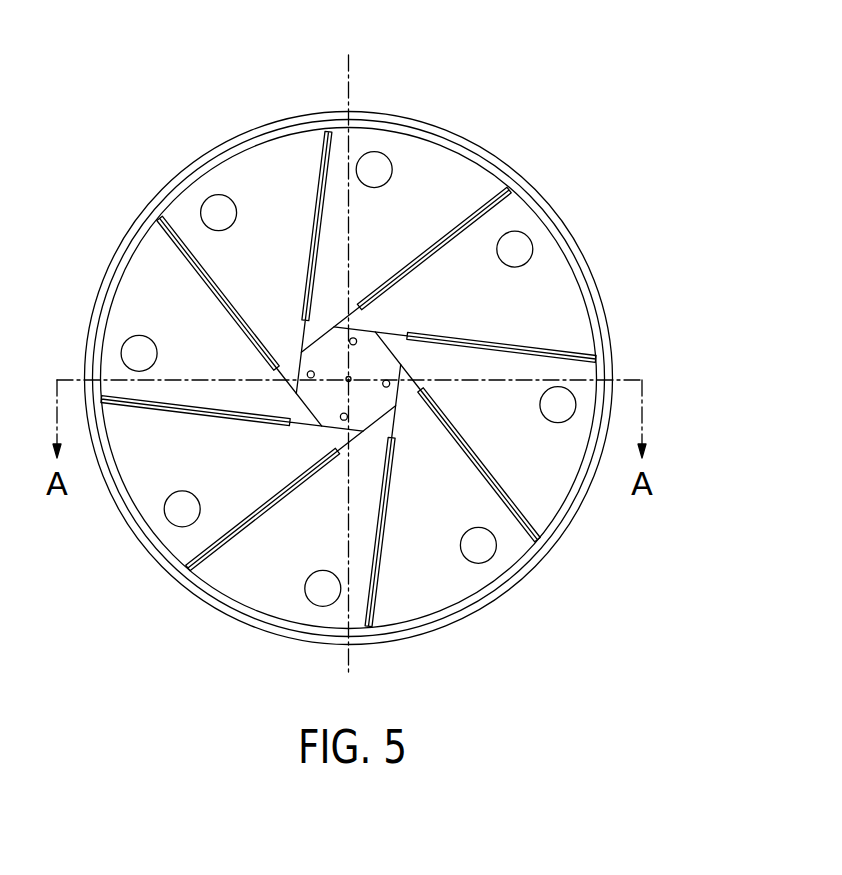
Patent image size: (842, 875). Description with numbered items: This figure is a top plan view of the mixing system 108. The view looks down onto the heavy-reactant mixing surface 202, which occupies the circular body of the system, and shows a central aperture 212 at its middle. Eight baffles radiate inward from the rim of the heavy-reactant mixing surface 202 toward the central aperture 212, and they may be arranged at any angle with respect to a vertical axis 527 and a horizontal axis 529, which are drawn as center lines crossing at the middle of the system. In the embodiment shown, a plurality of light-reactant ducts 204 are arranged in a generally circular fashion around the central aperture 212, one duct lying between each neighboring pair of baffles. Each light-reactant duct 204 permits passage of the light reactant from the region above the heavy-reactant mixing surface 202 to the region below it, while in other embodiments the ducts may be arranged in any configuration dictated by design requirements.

The mixing system 108 is at (573, 93).
The heavy-reactant mixing surface 202 is at (560, 245).
The light-reactant duct 204 is at (378, 152).
The central aperture 212 is at (387, 375).
The vertical axis 527 is at (345, 91).
The horizontal axis 529 is at (629, 377).